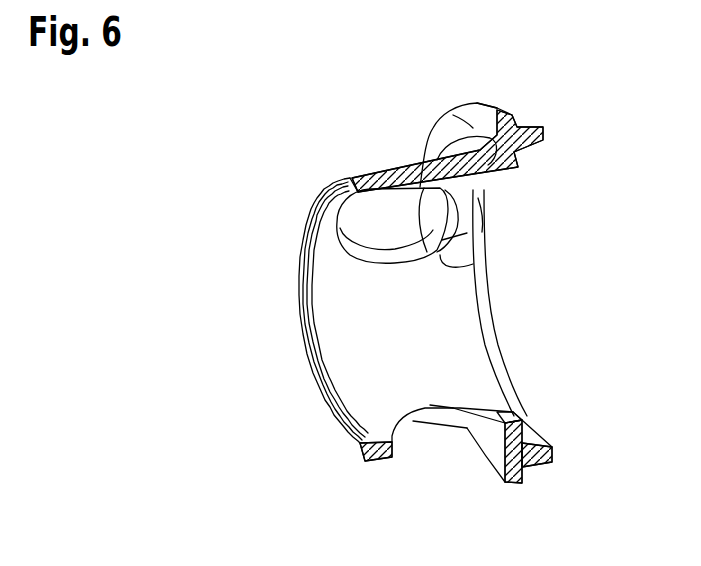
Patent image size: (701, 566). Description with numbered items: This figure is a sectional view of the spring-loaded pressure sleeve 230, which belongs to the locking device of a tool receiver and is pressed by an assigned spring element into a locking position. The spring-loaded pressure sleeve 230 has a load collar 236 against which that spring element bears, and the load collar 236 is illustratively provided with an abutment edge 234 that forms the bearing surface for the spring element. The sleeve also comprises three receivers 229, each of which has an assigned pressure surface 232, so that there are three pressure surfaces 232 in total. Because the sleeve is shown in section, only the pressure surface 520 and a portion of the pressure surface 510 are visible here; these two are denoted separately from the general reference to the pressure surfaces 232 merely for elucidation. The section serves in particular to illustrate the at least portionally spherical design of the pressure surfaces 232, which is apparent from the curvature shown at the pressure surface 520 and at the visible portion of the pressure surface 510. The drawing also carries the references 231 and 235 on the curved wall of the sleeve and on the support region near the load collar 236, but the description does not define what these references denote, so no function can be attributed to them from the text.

The spring-loaded pressure sleeve 230 is at (230, 149).
The curved band section 231 is at (322, 315).
The receiver 229 is at (373, 230).
The pressure surface 232 is at (438, 245).
The load collar 236 is at (463, 108).
The pressure surface 520 is at (450, 218).
The pressure surface 510 is at (515, 411).
The abutment edge 234 is at (540, 479).
The support plate 235 is at (486, 482).